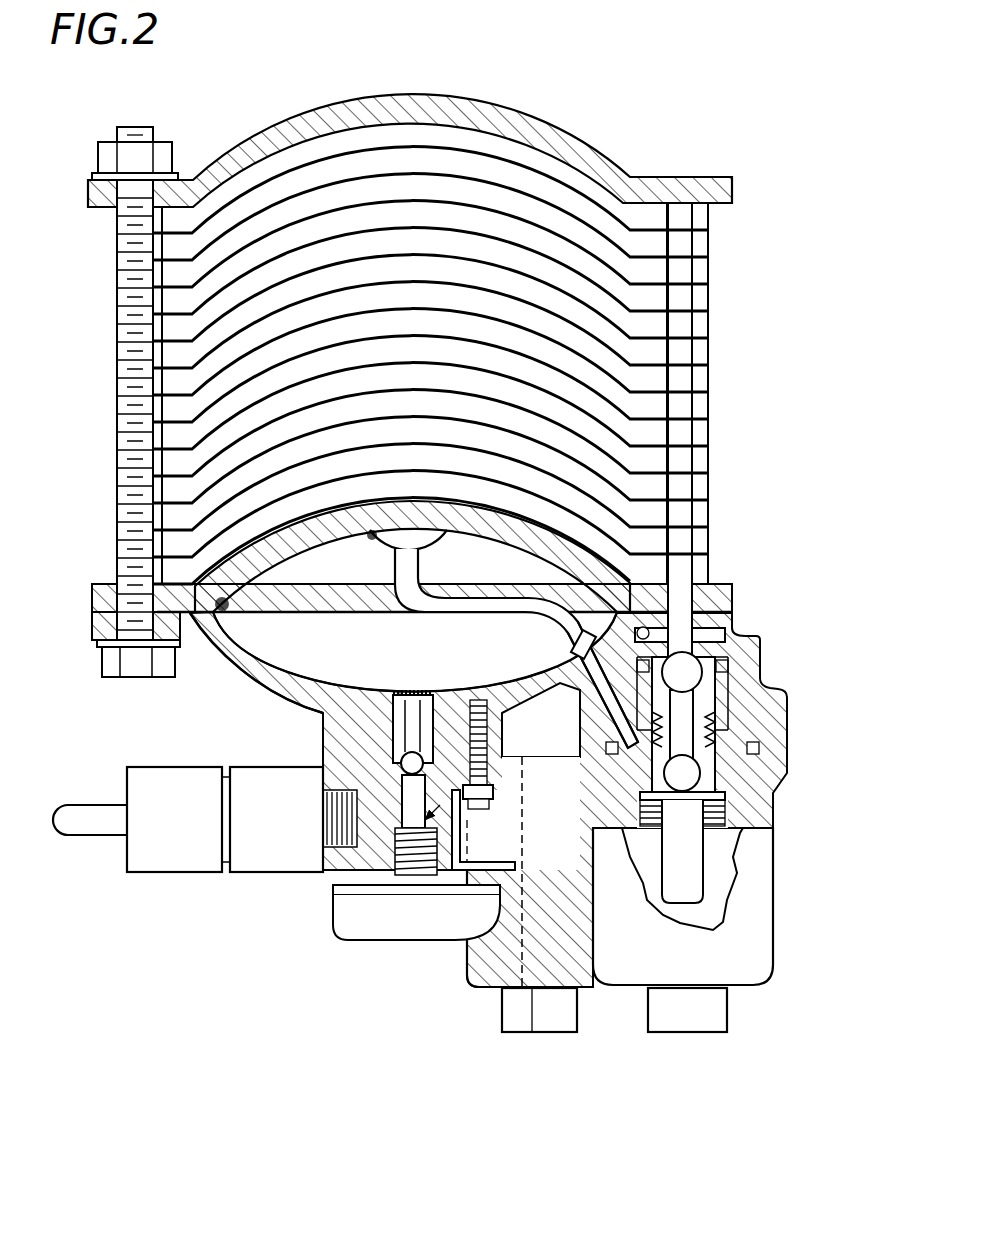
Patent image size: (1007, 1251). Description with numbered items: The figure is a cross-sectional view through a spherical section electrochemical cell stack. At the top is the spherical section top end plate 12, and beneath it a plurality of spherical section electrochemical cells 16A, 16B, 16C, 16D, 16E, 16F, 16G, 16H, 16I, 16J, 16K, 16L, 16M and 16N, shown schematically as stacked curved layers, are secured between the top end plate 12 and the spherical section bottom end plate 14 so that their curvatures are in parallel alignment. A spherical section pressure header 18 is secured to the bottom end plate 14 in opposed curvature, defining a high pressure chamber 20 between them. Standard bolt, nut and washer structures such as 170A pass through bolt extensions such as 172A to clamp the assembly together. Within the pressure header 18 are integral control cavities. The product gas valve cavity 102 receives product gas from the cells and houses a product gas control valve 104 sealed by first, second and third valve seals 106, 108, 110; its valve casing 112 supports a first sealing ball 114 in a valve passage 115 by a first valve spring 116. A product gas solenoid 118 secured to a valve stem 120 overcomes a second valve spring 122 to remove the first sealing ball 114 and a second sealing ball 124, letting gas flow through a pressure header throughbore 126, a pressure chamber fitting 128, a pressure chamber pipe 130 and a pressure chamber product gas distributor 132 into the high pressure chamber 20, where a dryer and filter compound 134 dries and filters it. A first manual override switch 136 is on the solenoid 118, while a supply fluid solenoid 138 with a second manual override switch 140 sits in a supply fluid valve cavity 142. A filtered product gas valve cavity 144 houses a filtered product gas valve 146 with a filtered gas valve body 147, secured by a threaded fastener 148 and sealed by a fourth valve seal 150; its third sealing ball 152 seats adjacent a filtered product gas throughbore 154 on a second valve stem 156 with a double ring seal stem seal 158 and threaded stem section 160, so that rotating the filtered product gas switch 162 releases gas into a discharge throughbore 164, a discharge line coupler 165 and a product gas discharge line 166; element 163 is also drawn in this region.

The spherical section top end plate 12 is at (575, 145).
The spherical section bottom end plate 14 is at (270, 540).
The spherical section electrochemical cell 16A is at (705, 216).
The spherical section electrochemical cell 16B is at (705, 243).
The spherical section electrochemical cell 16C is at (705, 270).
The spherical section electrochemical cell 16D is at (705, 297).
The spherical section electrochemical cell 16E is at (705, 324).
The spherical section electrochemical cell 16F is at (705, 351).
The spherical section electrochemical cell 16G is at (705, 378).
The spherical section electrochemical cell 16H is at (705, 405).
The spherical section electrochemical cell 16I is at (705, 432).
The spherical section electrochemical cell 16J is at (705, 459).
The spherical section electrochemical cell 16K is at (705, 486).
The spherical section electrochemical cell 16L is at (705, 513).
The spherical section electrochemical cell 16M is at (705, 540).
The spherical section electrochemical cell 16N is at (705, 567).
The spherical section pressure header 18 is at (230, 655).
The high pressure chamber 20 is at (300, 640).
The product gas valve cavity 102 is at (722, 760).
The product gas control valve 104 is at (686, 835).
The first valve seal 106 is at (702, 633).
The second valve seal 108 is at (703, 675).
The third valve seal 110 is at (760, 748).
The valve casing 112 is at (722, 733).
The first sealing ball 114 is at (705, 685).
The valve passage 115 is at (712, 770).
The first valve spring 116 is at (718, 715).
The product gas solenoid 118 is at (737, 960).
The valve stem 120 is at (690, 878).
The second valve spring 122 is at (722, 812).
The second sealing ball 124 is at (700, 797).
The pressure header throughbore 126 is at (565, 653).
The pressure chamber fitting 128 is at (590, 625).
The pressure chamber pipe 130 is at (485, 605).
The pressure chamber product gas distributor 132 is at (385, 545).
The product gas dryer and filter compound 134 is at (240, 610).
The first manual override switch 136 is at (702, 1035).
The supply fluid solenoid 138 is at (490, 967).
The second manual override switch 140 is at (522, 1035).
The supply fluid valve cavity 142 is at (567, 743).
The filtered product gas valve cavity 144 is at (432, 712).
The filtered product gas valve 146 is at (323, 863).
The filtered gas valve body 147 is at (335, 865).
The threaded fastener 148 is at (522, 778).
The fourth valve seal 150 is at (522, 808).
The third sealing ball 152 is at (398, 760).
The filtered product gas throughbore 154 is at (395, 725).
The second valve stem 156 is at (468, 826).
The double ring seal stem seal 158 is at (518, 865).
The threaded stem section 160 is at (420, 875).
The filtered product gas switch 162 is at (365, 918).
The threads 163 is at (327, 812).
The discharge throughbore 164 is at (328, 783).
The discharge line coupler 165 is at (162, 862).
The product gas discharge line 166 is at (95, 830).
The bolt, nut and washer structure 170A is at (88, 190).
The bolt extension 172A is at (118, 275).